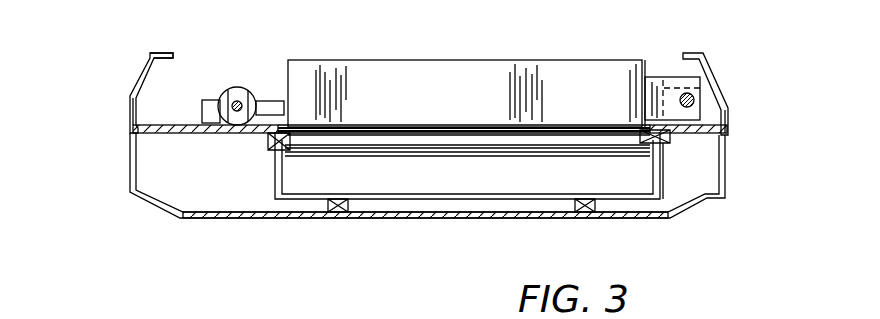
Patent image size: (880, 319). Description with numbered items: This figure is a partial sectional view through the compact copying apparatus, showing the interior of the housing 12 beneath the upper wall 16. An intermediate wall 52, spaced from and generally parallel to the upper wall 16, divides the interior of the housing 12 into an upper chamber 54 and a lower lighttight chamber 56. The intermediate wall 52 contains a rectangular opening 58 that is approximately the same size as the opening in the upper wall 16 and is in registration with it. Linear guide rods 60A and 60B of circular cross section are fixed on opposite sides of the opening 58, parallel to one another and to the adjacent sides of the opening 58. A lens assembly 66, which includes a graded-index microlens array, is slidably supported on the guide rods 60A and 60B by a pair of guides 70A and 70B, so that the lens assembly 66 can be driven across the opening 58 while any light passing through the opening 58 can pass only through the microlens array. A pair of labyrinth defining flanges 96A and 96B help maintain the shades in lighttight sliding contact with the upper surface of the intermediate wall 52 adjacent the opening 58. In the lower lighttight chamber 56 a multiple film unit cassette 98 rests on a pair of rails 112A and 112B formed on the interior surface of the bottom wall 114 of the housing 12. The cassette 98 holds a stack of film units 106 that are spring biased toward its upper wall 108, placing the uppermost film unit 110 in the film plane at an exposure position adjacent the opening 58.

The housing 12 is at (142, 65).
The upper wall 16 is at (158, 52).
The intermediate wall 52 is at (190, 138).
The upper chamber 54 is at (168, 80).
The lower lighttight chamber 56 is at (197, 193).
The rectangular opening 58 is at (548, 135).
The linear guide rod 60A is at (232, 93).
The linear guide rod 60B is at (695, 100).
The lens assembly 66 is at (428, 68).
The guide 70A is at (239, 87).
The guide 70B is at (653, 80).
The labyrinth defining flange 96A is at (272, 100).
The labyrinth defining flange 96B is at (664, 144).
The multiple film unit cassette 98 is at (277, 178).
The film units 106 is at (438, 129).
The upper wall 108 is at (280, 150).
The uppermost film unit 110 is at (373, 147).
The rail 112A is at (320, 217).
The rail 112B is at (567, 220).
The bottom wall 114 is at (443, 218).